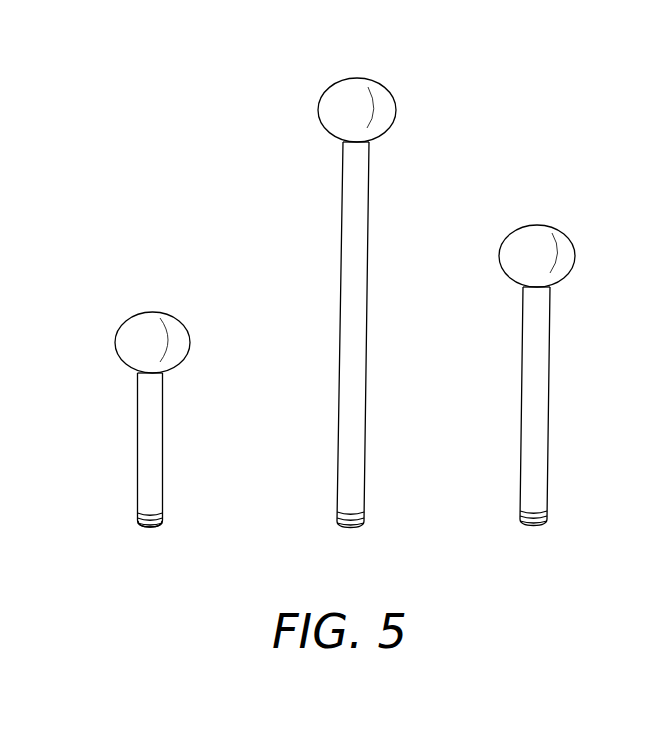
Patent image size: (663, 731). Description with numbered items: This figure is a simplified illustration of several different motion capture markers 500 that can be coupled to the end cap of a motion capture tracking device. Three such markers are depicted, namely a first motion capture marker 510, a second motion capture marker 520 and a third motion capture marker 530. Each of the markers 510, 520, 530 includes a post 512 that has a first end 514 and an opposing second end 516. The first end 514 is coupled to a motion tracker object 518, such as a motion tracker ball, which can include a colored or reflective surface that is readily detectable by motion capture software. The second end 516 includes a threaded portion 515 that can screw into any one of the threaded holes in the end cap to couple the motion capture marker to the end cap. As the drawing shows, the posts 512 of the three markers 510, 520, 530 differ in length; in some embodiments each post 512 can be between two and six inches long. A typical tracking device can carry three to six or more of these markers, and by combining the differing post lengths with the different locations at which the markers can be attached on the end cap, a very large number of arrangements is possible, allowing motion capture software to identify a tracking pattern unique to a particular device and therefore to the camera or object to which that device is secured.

The motion capture markers 500 is at (159, 91).
The motion capture marker 510 is at (118, 292).
The post 512 is at (163, 442).
The first end 514 is at (150, 381).
The threaded portion 515 is at (162, 512).
The second end 516 is at (152, 527).
The motion tracker object 518 is at (188, 332).
The motion capture marker 520 is at (326, 60).
The motion capture marker 530 is at (514, 208).